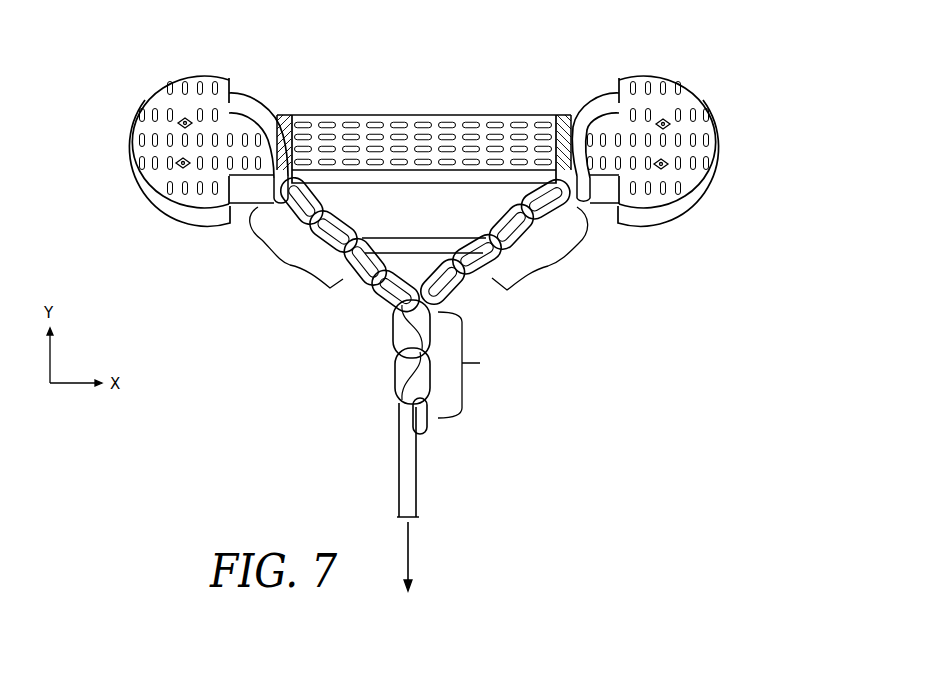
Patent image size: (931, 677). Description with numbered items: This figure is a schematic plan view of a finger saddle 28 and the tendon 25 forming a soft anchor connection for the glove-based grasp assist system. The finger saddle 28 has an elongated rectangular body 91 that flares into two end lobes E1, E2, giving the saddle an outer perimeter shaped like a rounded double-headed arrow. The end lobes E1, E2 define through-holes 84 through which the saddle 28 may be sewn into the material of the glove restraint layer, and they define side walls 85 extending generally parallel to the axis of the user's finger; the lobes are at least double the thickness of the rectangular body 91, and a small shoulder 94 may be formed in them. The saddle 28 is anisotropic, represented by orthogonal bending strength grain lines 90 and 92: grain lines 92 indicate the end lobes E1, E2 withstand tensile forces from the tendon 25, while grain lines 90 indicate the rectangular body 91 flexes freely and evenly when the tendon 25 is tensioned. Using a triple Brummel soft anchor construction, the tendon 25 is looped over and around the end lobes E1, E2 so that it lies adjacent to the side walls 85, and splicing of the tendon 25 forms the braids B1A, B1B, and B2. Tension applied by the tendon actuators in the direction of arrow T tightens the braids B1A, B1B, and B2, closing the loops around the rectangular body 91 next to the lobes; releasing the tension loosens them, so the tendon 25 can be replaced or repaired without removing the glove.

The finger saddle 28 is at (690, 52).
The through-holes 84 is at (179, 159).
The side walls 85 is at (243, 207).
The grain lines 90 is at (410, 114).
The rectangular body 91 is at (481, 105).
The grain lines 92 is at (236, 92).
The shoulder 94 is at (300, 110).
The tendon 25 is at (390, 290).
The end lobe E1 is at (142, 150).
The end lobe E2 is at (708, 143).
The braid B1A is at (282, 264).
The braid B1B is at (560, 266).
The braid B2 is at (480, 363).
The arrow T (tension direction) T is at (413, 547).